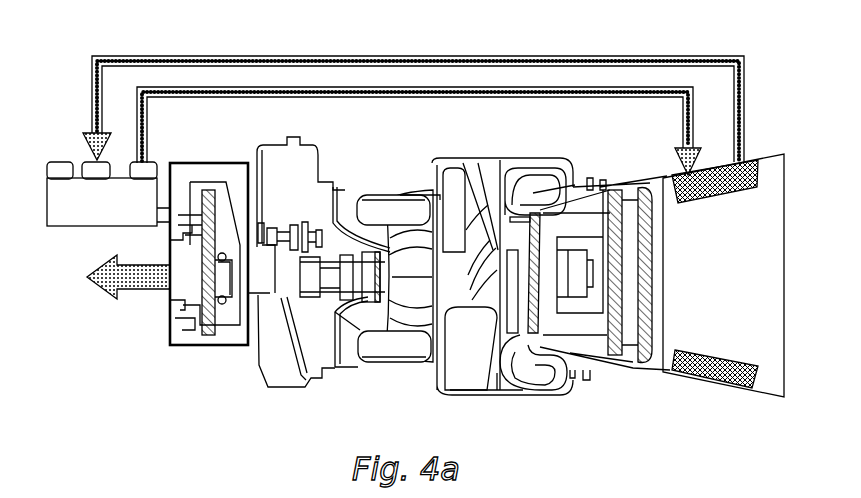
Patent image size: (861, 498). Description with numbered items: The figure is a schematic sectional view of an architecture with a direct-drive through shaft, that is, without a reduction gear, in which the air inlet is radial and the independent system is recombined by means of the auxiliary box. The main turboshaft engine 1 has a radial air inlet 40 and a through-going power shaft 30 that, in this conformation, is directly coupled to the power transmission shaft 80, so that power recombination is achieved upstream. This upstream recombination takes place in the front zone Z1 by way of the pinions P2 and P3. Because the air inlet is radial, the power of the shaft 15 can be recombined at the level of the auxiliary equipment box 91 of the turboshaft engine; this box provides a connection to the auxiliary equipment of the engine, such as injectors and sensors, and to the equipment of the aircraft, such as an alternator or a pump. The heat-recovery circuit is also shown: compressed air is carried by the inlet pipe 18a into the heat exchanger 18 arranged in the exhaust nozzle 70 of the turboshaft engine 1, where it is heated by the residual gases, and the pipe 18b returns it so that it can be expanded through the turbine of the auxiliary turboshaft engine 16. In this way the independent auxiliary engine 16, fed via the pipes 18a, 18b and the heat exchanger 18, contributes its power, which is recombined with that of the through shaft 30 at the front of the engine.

The inlet pipe 18a is at (380, 58).
The pipe 18b is at (457, 95).
The auxiliary turboshaft engine 16 is at (108, 194).
The shaft 15 is at (180, 216).
The pinion P3 is at (210, 190).
The pinion P2 is at (207, 300).
The front location Z1 is at (182, 350).
The power transmission shaft 80 is at (116, 270).
The auxiliary equipment box 91 is at (186, 324).
The through-going power shaft 30 is at (297, 306).
The radial air inlet 40 is at (347, 188).
The main turboshaft engine 1 is at (394, 390).
The heat exchanger 18 is at (730, 188).
The exhaust nozzle 70 is at (728, 281).